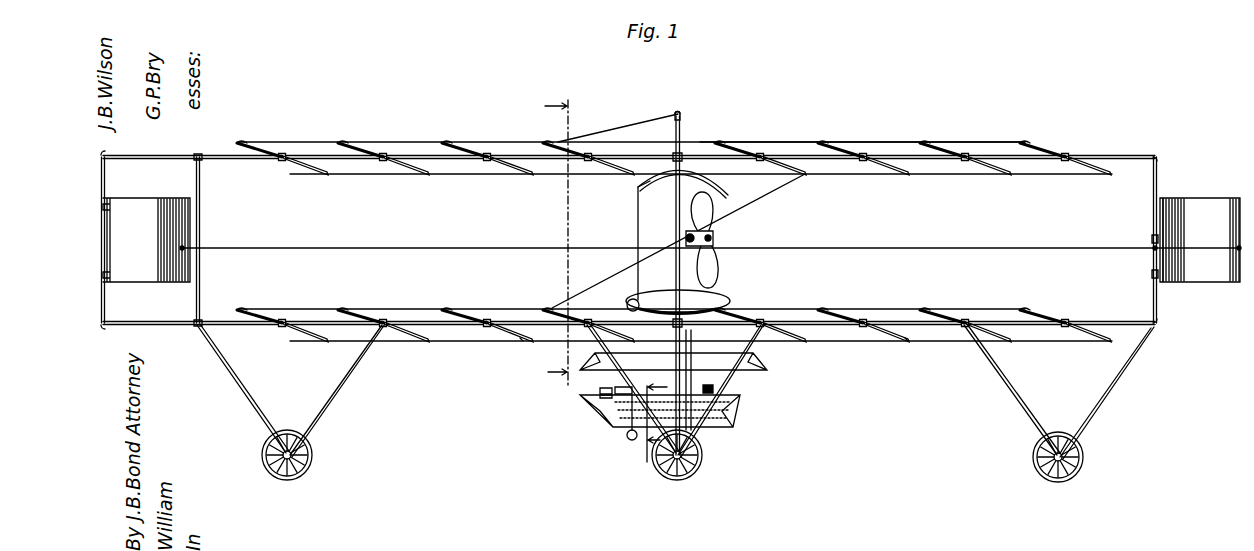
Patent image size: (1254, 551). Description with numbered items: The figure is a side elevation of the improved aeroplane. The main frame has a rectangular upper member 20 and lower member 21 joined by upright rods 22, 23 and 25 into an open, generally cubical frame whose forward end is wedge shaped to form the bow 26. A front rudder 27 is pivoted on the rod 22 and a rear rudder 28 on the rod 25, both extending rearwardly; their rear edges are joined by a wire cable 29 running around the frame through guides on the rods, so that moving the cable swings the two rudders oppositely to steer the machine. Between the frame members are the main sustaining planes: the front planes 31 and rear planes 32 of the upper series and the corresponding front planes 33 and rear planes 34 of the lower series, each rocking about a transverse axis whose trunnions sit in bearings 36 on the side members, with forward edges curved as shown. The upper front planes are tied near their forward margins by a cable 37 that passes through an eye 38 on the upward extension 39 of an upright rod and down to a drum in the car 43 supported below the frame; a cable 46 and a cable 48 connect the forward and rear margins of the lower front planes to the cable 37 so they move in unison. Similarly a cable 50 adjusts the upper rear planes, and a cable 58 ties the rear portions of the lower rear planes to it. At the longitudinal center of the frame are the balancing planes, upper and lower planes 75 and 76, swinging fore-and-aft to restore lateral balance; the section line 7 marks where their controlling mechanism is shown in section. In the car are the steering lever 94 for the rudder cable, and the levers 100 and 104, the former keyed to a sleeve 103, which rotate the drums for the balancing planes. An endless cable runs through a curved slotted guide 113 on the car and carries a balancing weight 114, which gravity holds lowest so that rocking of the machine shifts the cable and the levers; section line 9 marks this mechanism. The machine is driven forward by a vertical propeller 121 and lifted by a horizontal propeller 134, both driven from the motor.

The section line 7- 7 is at (559, 239).
The section line 9- 9 is at (650, 433).
The upper member of main frame 20 is at (412, 157).
The lower member of main frame 21 is at (418, 341).
The upright rod 22 is at (107, 183).
The upright rod 23 is at (214, 188).
The upright rod 25 is at (1153, 222).
The bow 26 is at (173, 146).
The front rudder 27 is at (140, 273).
The rear rudder 28 is at (1215, 270).
The wire cable 29 is at (457, 241).
The front planes of upper series 31 is at (313, 174).
The rear planes of upper series 32 is at (780, 171).
The front planes of lower series 33 is at (260, 312).
The rear planes of lower series 34 is at (850, 313).
The bearings 36 is at (282, 153).
The cable 37 is at (370, 140).
The eye 38 is at (670, 126).
The upward extension of rod 24 39 is at (686, 124).
The car 43 is at (735, 413).
The cable 46 is at (548, 310).
The cable 48 is at (520, 342).
The cable 50 is at (893, 136).
The cable 58 is at (905, 342).
The upper balancing plane 75 is at (735, 181).
The lower balancing plane 76 is at (634, 296).
The steering lever 94 is at (640, 385).
The lever 100 is at (600, 391).
The sleeve 103 is at (715, 384).
The lever 104 is at (605, 397).
The curved guide 113 is at (627, 433).
The balancing weight 114 is at (627, 441).
The vertical propeller 121 is at (718, 276).
The horizontal propeller 134 is at (726, 298).